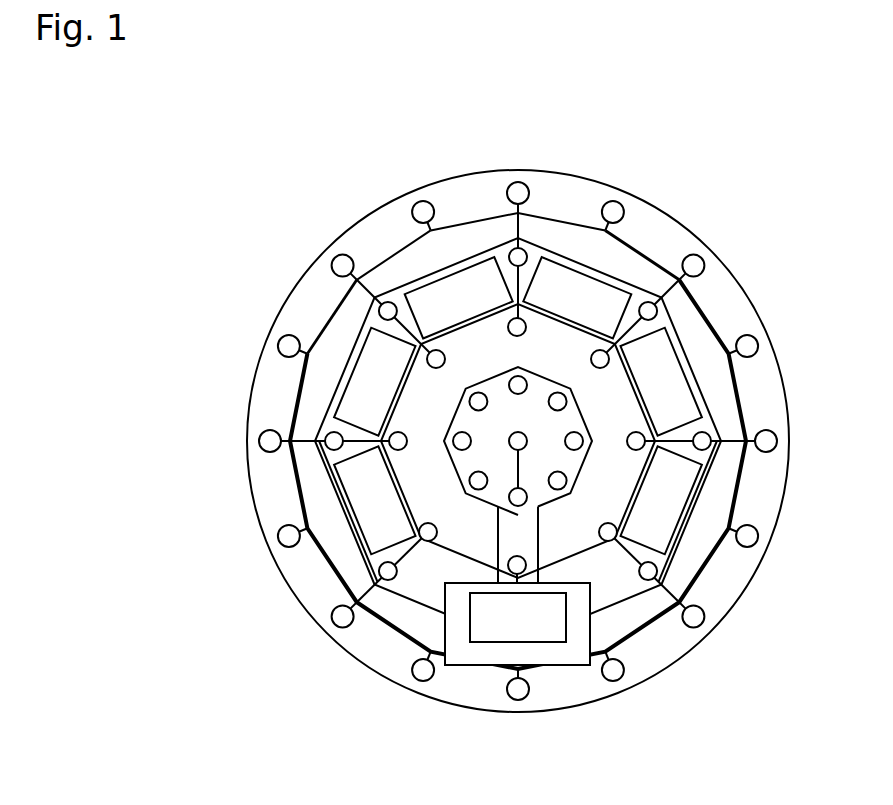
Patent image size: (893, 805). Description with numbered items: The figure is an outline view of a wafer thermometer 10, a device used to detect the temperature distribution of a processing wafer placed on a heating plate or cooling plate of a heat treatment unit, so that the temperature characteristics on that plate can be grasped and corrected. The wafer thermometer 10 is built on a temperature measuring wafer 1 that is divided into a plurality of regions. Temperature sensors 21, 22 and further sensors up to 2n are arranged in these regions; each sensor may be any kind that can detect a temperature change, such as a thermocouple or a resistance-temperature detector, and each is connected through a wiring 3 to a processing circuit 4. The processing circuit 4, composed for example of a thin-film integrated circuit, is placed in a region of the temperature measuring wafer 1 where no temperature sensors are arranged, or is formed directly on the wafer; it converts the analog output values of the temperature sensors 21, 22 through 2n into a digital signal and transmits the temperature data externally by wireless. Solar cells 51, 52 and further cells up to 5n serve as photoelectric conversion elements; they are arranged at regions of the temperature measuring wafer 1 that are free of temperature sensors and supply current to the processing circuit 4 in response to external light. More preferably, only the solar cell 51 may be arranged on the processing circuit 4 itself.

The wafer thermometer 10 is at (700, 180).
The temperature measuring wafer 1 is at (561, 197).
The temperature sensor 2n is at (517, 192).
The temperature sensor 21 is at (614, 208).
The temperature sensor 22 is at (695, 265).
The wiring 3 is at (745, 391).
The processing circuit 4 is at (556, 652).
The solar cell 51 is at (491, 627).
The solar cell 52 is at (372, 528).
The solar cell 5n is at (663, 530).